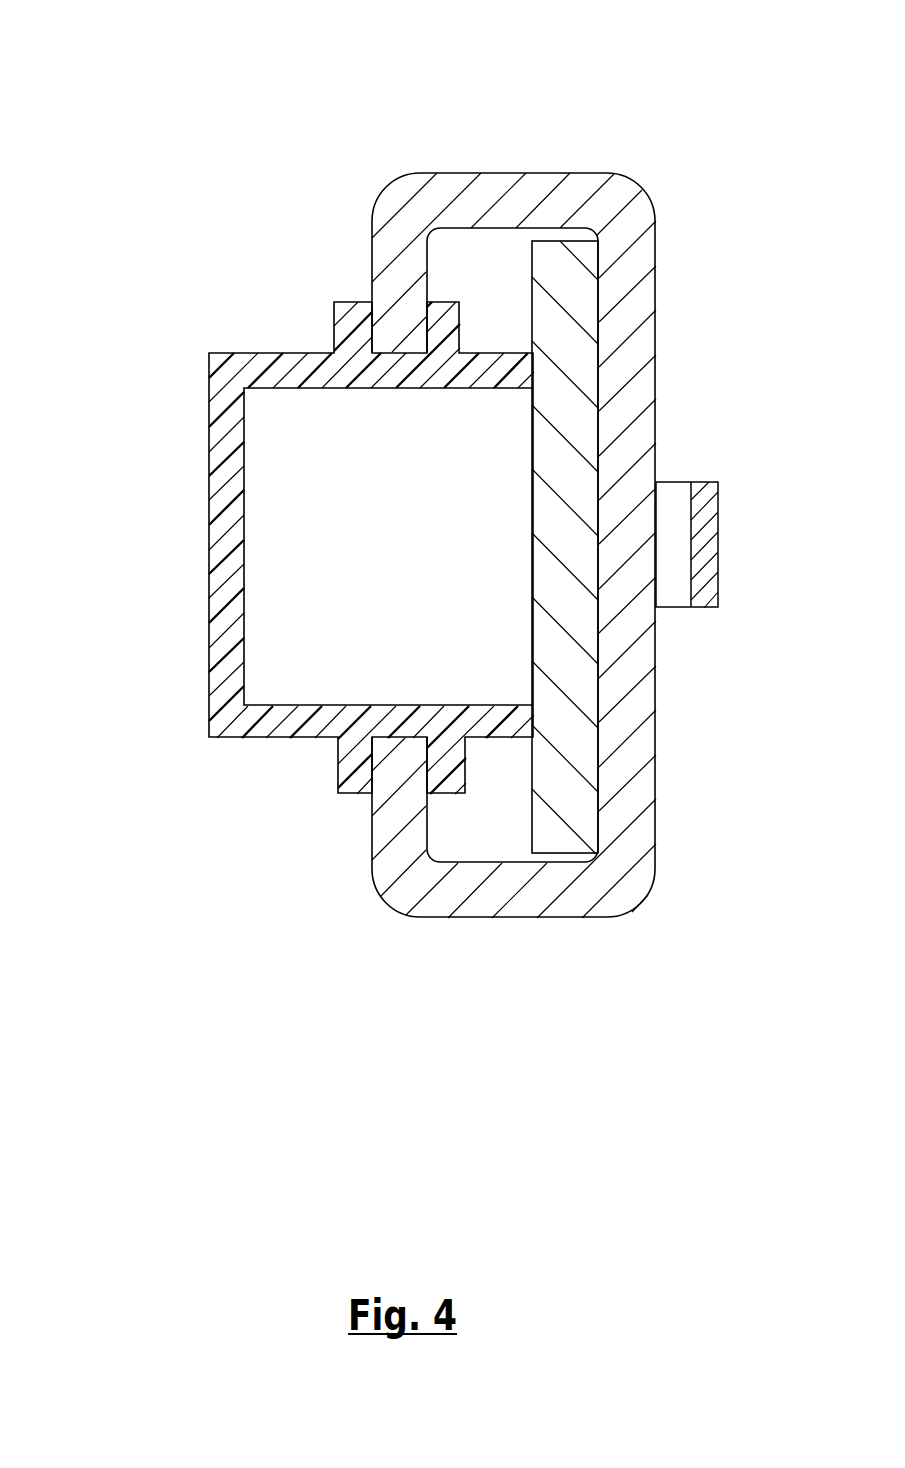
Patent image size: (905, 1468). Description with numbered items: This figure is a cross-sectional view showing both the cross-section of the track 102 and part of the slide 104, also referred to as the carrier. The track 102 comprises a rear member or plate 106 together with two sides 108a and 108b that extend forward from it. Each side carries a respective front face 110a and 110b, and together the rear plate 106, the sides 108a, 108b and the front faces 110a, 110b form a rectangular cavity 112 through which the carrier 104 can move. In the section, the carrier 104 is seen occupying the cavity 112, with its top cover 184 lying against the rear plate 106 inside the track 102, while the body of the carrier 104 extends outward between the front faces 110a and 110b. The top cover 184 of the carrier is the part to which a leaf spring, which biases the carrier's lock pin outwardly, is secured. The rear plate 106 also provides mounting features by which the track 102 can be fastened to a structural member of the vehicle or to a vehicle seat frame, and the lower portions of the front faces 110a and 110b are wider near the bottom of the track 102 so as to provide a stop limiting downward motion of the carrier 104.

The track 102 is at (570, 202).
The slide 104 is at (170, 531).
The rear plate 106 is at (640, 310).
The side 108a is at (488, 202).
The side 108b is at (475, 905).
The front face 110a is at (382, 303).
The front face 110b is at (388, 816).
The rectangular cavity 112 is at (468, 833).
The top cover 184 is at (230, 720).